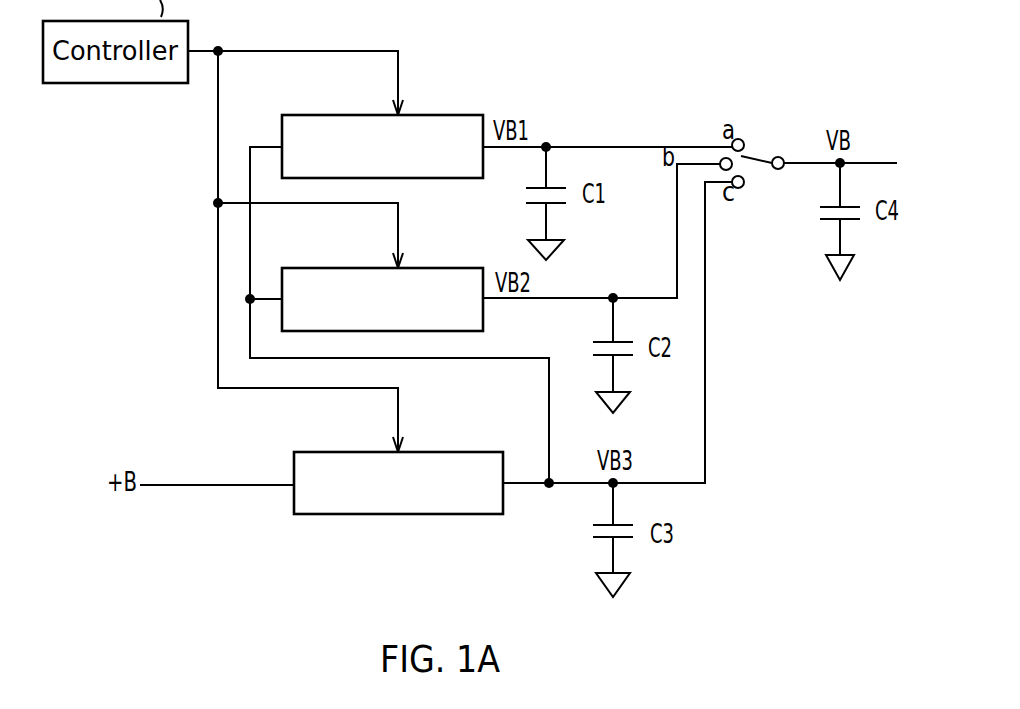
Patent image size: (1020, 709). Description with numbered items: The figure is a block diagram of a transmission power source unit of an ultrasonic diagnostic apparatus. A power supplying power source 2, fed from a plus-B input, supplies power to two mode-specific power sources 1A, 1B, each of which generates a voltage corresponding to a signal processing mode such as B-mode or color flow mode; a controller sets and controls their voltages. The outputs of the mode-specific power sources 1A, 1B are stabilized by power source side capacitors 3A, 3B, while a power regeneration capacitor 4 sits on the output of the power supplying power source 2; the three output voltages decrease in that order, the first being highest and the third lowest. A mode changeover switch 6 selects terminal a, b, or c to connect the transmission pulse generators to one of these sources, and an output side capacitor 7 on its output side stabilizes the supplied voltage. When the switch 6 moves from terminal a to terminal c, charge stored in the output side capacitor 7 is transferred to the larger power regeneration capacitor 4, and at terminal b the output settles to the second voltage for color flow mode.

The mode-specific power source 1A is at (435, 114).
The mode-specific power source 1B is at (435, 267).
The power supplying power source 2 is at (456, 451).
The power source side capacitor 3A is at (526, 197).
The power source side capacitor 3B is at (592, 348).
The power regeneration capacitor 4 is at (592, 535).
The mode changeover switch 6 is at (756, 145).
The output side capacitor 7 is at (819, 216).